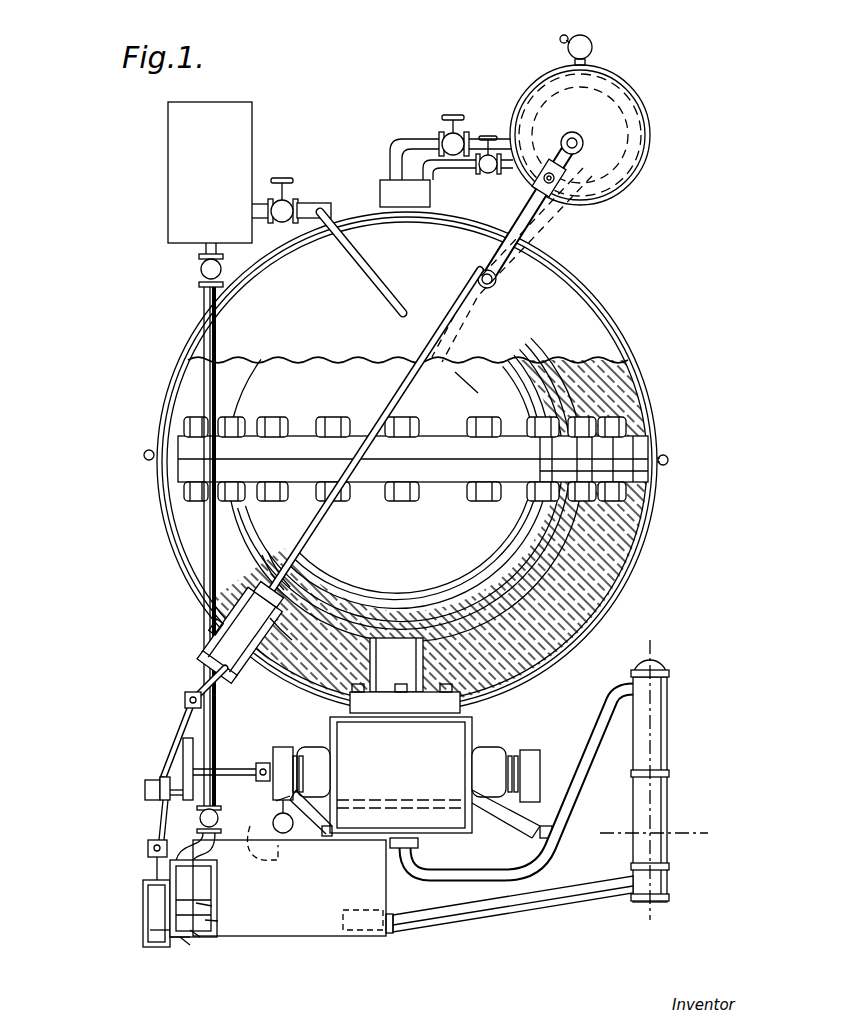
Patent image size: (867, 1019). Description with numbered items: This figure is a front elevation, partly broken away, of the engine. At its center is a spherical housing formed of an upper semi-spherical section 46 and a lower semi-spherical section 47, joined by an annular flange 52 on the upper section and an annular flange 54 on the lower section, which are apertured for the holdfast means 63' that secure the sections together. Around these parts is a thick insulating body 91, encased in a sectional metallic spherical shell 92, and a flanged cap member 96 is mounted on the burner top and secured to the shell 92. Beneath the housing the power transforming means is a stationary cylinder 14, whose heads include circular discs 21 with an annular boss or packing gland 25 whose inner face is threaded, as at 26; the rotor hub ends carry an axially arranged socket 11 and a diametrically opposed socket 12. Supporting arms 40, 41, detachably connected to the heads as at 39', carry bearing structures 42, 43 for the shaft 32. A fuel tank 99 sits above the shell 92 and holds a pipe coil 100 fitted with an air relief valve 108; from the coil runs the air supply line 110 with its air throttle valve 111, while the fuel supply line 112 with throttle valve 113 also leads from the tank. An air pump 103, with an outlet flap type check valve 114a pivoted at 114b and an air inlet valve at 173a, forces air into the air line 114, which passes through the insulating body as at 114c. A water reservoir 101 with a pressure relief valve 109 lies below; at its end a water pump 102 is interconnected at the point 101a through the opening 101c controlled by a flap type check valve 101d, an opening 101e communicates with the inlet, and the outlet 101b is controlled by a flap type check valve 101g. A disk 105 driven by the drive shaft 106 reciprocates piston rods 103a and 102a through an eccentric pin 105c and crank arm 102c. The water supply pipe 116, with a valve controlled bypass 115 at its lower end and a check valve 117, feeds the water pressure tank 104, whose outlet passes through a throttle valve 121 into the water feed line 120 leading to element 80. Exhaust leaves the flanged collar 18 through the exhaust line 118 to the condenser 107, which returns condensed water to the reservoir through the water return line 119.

The axially arranged socket 11 is at (652, 777).
The diametrically opposed socket 12 is at (656, 836).
The cylinder 14 is at (452, 736).
The annular flanged collar 18 is at (432, 856).
The circular disc 21 is at (338, 748).
The annular boss or packing gland 25 is at (318, 750).
The threaded inner face 26 is at (492, 757).
The shaft 32 is at (240, 830).
The detachable connection 39' is at (427, 846).
The supporting arm 40 is at (312, 822).
The supporting arm 41 is at (488, 822).
The bearing structure 42 is at (283, 745).
The bearing structure 43 is at (535, 750).
The upper semi-spherical section 46 is at (470, 383).
The lower semi-spherical section 47 is at (598, 570).
The annular flange 52 is at (625, 450).
The annular flange 54 is at (625, 482).
The holdfast means 63' is at (405, 458).
The element 80 is at (344, 244).
The insulating body 91 is at (612, 396).
The sectional metallic spherical shell 92 is at (614, 318).
The flanged cap member 96 is at (380, 190).
The fuel tank 99 is at (642, 93).
The pipe coil 100 is at (644, 117).
The water reservoir 101 is at (218, 937).
The interconnection point 101a is at (185, 945).
The pump outlet 101b is at (212, 905).
The opening 101c is at (196, 940).
The flap type check valve 101d is at (218, 921).
The opening 101e is at (172, 940).
The flap type check valve 101g is at (160, 930).
The water pump 102 is at (143, 906).
The piston rod 102a is at (150, 858).
The crank arm 102c is at (158, 820).
The air pump 103 is at (246, 600).
The piston rod 103a is at (213, 672).
The water pressure tank 104 is at (182, 178).
The disk 105 is at (183, 755).
The eccentric pin 105c is at (143, 790).
The drive shaft 106 is at (226, 768).
The condenser 107 is at (655, 802).
The air relief valve 108 is at (588, 40).
The pressure relief valve 109 is at (336, 870).
The air supply line 110 is at (418, 140).
The air throttle valve 111 is at (452, 116).
The fuel supply line 112 is at (455, 170).
The throttle valve 113 is at (488, 176).
The air inlet valve 173a is at (215, 625).
The air line 114 is at (522, 224).
The flap type check valve 114a is at (282, 568).
The pivot 114b is at (286, 612).
The intermediate portion of air line 114c is at (317, 525).
The valve controlled bypass 115 is at (215, 837).
The water supply pipe 116 is at (204, 372).
The check valve 117 is at (199, 270).
The exhaust line 118 is at (568, 784).
The water return line 119 is at (468, 915).
The water feed line 120 is at (312, 203).
The throttle valve 121 is at (284, 177).